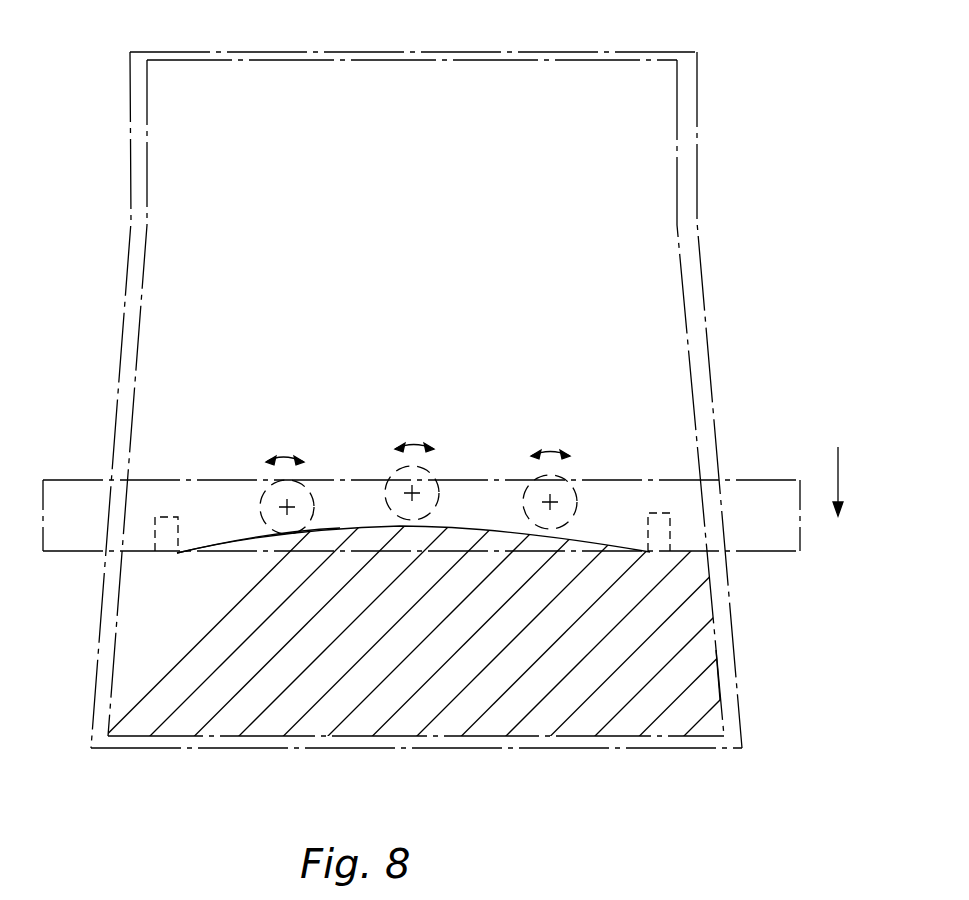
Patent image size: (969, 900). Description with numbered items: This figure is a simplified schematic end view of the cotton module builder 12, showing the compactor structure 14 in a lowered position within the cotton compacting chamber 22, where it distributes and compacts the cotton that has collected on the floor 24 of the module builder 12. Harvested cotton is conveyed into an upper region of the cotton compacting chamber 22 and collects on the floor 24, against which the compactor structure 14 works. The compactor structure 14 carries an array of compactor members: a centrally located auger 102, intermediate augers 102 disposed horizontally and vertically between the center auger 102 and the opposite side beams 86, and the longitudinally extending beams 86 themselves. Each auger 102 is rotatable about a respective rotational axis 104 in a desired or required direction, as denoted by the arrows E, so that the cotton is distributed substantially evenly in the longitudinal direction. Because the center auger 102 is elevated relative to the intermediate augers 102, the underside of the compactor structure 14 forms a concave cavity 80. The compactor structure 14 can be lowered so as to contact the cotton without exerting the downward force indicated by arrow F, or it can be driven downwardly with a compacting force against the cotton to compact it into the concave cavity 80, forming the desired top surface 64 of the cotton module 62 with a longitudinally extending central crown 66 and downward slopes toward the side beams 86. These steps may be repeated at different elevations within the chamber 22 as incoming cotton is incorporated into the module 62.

The cotton module builder 12 is at (703, 50).
The compactor structure 14 is at (800, 478).
The cotton compacting chamber 22 is at (430, 346).
The floor 24 is at (606, 722).
The cotton module 62 is at (724, 645).
The top surface 64 is at (499, 527).
The crown 66 is at (392, 528).
The cavity 80 is at (327, 540).
The beams 86 is at (155, 519).
The auger 102 is at (278, 482).
The rotational axis 104 is at (278, 507).
The arrows denoting auger rotation direction E is at (282, 458).
The arrow denoting downward force F is at (840, 470).